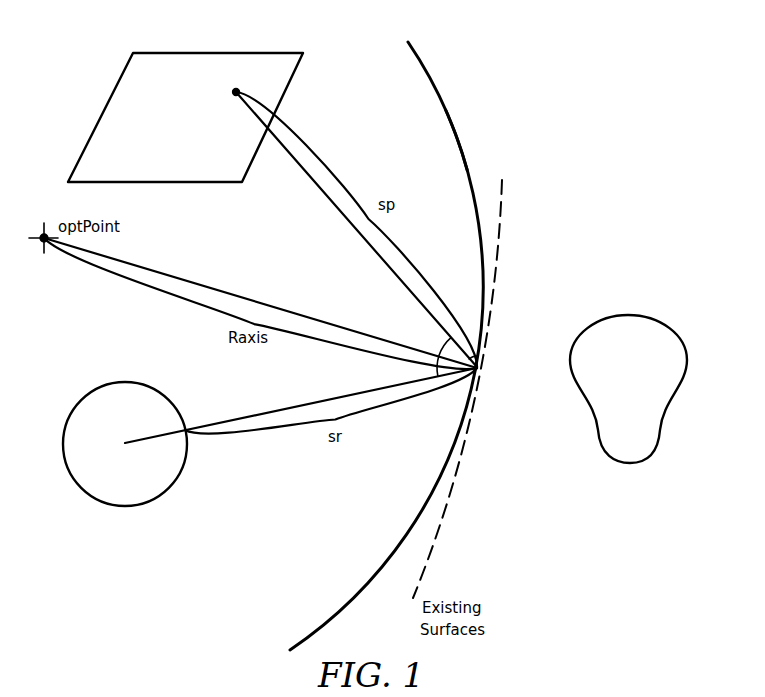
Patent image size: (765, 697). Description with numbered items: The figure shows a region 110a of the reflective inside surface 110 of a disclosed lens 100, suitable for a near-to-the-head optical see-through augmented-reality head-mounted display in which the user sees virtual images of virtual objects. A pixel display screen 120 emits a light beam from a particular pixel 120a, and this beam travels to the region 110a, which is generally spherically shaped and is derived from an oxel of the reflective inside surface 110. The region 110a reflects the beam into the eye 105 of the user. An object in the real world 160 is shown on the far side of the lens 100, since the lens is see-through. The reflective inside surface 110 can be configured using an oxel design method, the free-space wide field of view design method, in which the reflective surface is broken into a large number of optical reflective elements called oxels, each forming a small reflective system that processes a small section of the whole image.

The pixel display screen 120 is at (212, 53).
The pixel 120a is at (233, 92).
The lens 100 is at (455, 76).
The reflective inside surface 110 is at (456, 142).
The region 110a is at (480, 368).
The eye 105 is at (142, 503).
The real world 160 is at (595, 445).